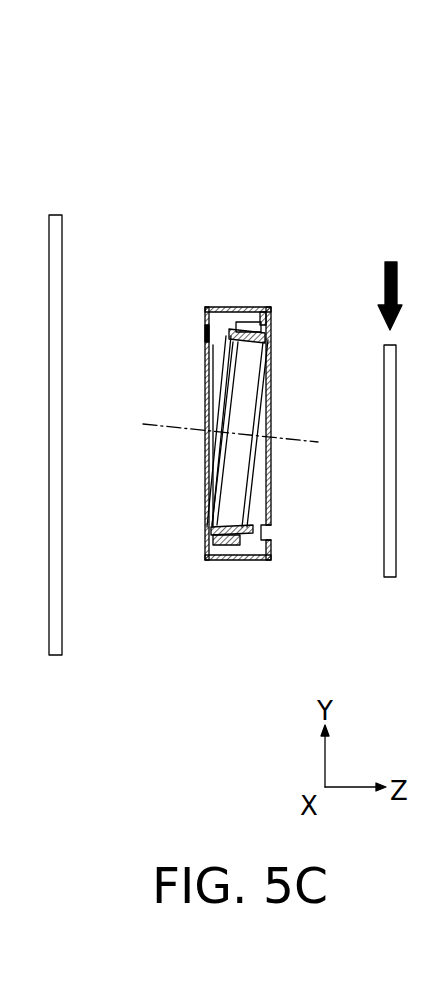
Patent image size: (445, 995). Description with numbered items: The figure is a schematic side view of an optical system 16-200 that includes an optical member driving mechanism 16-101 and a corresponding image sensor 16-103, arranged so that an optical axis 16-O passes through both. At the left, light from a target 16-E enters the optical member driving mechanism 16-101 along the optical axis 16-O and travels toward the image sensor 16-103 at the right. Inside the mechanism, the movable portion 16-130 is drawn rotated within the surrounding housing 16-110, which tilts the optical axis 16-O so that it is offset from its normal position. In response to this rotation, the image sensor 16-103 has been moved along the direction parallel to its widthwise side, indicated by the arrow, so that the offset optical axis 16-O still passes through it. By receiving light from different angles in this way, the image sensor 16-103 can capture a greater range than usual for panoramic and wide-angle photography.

The optical system 16-200 is at (270, 25).
The optical member driving mechanism 16-101 is at (240, 273).
The image sensor 16-103 is at (391, 578).
The housing 16-110 is at (205, 320).
The movable portion 16-130 is at (257, 360).
The target 16-E is at (57, 213).
The optical axis 16-O is at (260, 442).